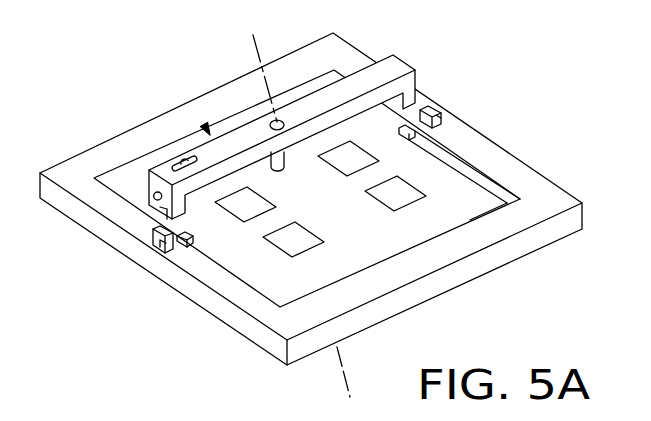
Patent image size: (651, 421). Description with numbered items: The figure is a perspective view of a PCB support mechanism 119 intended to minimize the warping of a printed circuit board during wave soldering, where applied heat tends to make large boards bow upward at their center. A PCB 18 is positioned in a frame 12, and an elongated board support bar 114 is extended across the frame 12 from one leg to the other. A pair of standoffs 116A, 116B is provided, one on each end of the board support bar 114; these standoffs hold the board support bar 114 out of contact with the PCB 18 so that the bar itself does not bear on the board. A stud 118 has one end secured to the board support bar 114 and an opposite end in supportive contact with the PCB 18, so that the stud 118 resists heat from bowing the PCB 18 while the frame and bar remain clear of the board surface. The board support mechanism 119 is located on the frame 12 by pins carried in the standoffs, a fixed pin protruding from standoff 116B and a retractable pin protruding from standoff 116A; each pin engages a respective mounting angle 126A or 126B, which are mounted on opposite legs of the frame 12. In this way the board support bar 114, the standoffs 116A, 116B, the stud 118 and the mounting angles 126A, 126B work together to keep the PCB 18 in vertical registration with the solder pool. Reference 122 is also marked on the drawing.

The frame 12 is at (277, 327).
The PCB 18 is at (230, 258).
The board support bar 114 is at (350, 88).
The standoff 116A is at (160, 234).
The standoff 116B is at (410, 97).
The stud 118 is at (285, 150).
The PCB support mechanism 119 is at (206, 126).
The hole 122 is at (152, 198).
The mounting angle 126A is at (160, 258).
The mounting angle 126B is at (443, 118).